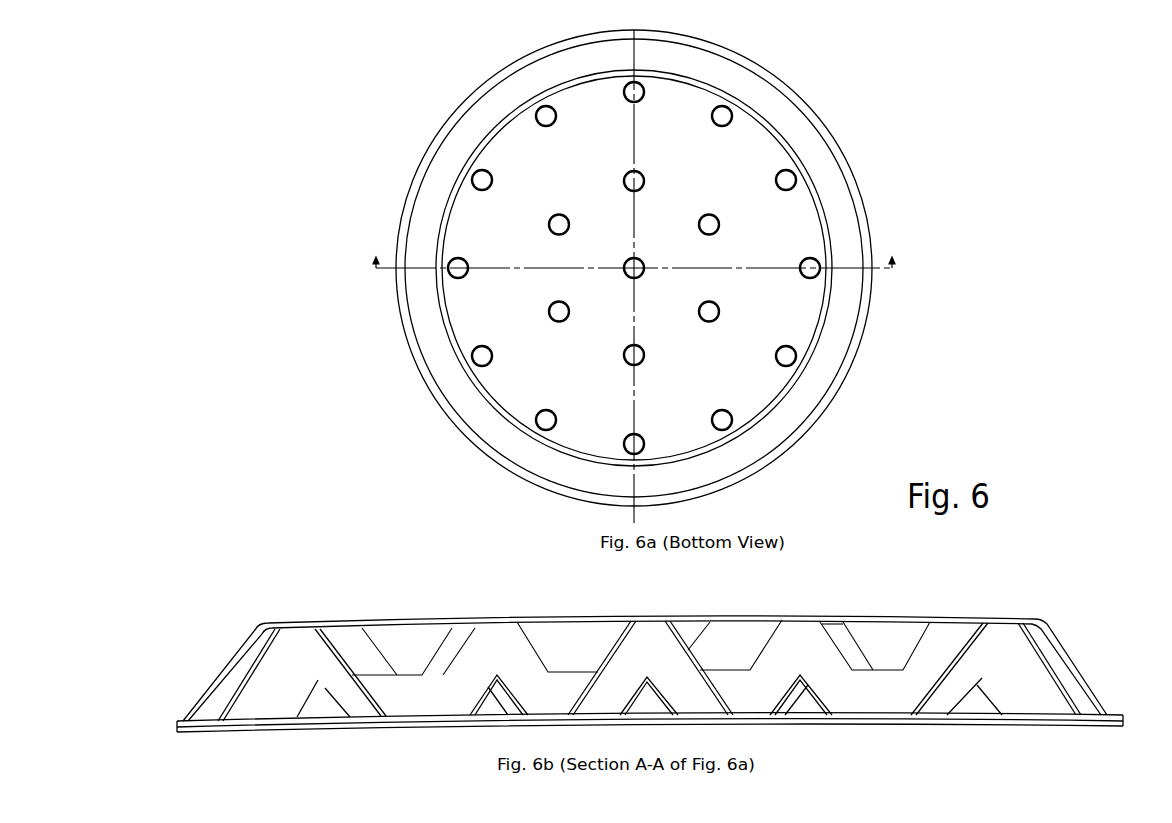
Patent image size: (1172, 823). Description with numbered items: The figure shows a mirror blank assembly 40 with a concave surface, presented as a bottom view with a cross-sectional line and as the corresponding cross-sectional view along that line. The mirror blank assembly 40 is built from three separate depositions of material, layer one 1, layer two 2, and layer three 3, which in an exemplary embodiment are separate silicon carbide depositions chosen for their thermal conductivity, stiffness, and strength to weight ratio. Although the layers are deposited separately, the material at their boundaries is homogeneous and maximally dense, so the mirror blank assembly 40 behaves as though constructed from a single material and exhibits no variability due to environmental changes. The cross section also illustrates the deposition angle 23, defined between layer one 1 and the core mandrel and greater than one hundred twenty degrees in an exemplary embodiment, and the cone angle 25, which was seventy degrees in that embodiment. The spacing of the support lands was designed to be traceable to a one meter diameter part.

In FIG. 6A, the mirror blank assembly 40 is at (635, 276).
In FIG. 6B, the mirror blank assembly 40 is at (617, 673).
In FIG. 6B, the layer one 1 is at (650, 753).
In FIG. 6B, the layer two 2 is at (649, 643).
In FIG. 6B, the layer three 3 is at (645, 637).
In FIG. 6B, the deposition angle 23 is at (1138, 697).
In FIG. 6B, the cone angle 25 is at (325, 648).